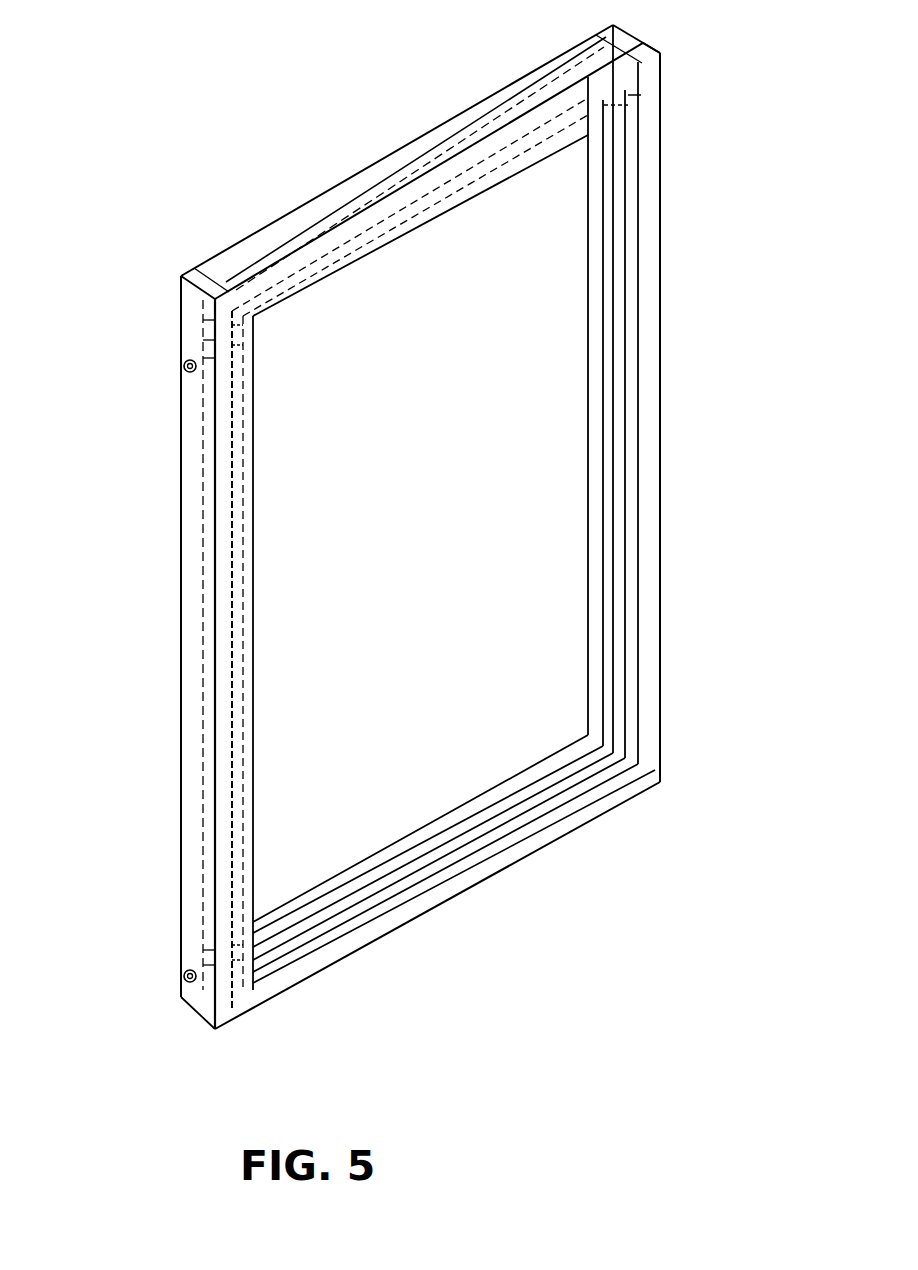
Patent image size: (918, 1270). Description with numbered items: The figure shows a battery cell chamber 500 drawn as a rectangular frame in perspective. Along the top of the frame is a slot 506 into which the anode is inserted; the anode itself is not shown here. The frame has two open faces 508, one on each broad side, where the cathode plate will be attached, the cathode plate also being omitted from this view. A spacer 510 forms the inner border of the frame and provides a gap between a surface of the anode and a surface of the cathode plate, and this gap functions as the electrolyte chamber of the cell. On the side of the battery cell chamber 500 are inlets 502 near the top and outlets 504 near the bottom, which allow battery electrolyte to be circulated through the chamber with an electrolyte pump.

The battery cell chamber 500 is at (213, 195).
The inlets 502 is at (183, 360).
The outlets 504 is at (183, 970).
The slot 506 is at (410, 185).
The open faces 508 is at (555, 363).
The spacer 510 is at (636, 275).